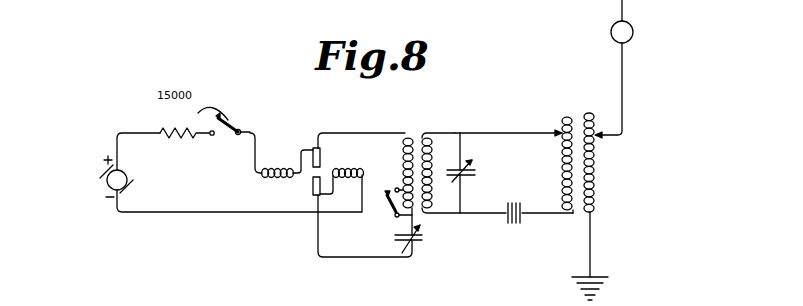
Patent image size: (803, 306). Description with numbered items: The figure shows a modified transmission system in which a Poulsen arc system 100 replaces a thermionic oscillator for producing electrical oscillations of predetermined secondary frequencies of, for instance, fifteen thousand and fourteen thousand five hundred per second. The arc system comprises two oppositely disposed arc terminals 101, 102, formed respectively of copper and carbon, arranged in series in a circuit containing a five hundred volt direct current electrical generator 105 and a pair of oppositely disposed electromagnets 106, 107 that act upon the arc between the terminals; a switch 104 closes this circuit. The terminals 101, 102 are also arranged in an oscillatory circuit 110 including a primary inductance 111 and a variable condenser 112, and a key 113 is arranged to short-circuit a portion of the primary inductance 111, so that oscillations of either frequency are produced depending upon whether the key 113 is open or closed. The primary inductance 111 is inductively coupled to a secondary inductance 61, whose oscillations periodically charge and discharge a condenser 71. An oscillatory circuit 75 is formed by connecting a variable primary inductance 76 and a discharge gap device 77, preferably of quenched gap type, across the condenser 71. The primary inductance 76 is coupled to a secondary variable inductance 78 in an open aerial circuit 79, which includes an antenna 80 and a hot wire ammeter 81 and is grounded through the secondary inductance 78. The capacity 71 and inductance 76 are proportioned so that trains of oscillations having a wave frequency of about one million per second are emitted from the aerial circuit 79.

The Poulsen arc system 100 is at (239, 161).
The switch 104 is at (204, 122).
The direct current electrical generator 105 is at (102, 181).
The electromagnet 106 is at (291, 169).
The arc terminal 101 is at (321, 162).
The arc terminal 102 is at (313, 183).
The electromagnet 107 is at (364, 173).
The oscillatory circuit 110 is at (372, 152).
The primary inductance 111 is at (403, 147).
The key 113 is at (387, 202).
The variable condenser 112 is at (413, 244).
The secondary inductance 61 is at (429, 170).
The oscillatory circuit 75 is at (508, 142).
The condenser 71 is at (476, 172).
The discharge gap device 77 is at (514, 223).
The variable primary inductance 76 is at (562, 160).
The secondary variable inductance 78 is at (595, 173).
The open aerial circuit 79 is at (624, 73).
The antenna 80 is at (623, 8).
The hot wire ammeter 81 is at (634, 32).